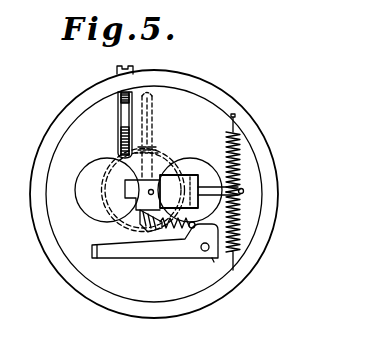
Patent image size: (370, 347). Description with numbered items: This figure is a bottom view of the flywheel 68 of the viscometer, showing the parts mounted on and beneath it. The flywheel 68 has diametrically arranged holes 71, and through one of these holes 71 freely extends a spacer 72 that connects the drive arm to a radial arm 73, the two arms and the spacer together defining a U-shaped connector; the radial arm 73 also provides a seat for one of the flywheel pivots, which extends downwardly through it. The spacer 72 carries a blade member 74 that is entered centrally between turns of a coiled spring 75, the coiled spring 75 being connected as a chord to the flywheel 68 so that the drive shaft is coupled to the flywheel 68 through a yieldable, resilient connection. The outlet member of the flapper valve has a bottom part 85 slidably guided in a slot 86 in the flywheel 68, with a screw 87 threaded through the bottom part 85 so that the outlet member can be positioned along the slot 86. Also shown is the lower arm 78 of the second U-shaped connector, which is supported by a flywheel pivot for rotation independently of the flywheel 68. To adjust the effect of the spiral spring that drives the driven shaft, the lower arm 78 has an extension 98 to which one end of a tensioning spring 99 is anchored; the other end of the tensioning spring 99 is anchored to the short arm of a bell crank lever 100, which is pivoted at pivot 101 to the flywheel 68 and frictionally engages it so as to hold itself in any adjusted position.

The flywheel 68 is at (141, 306).
The diametrically arranged holes 71 is at (91, 166).
The spacer 72 is at (191, 170).
The radial arm 73 is at (165, 160).
The blade member 74 is at (239, 164).
The coiled spring 75 is at (240, 232).
The lower arm 78 is at (149, 195).
The bottom part 85 is at (121, 108).
The slot 86 is at (131, 88).
The screw 87 is at (120, 135).
The extension 98 is at (150, 214).
The tensioning spring 99 is at (173, 230).
The bell crank lever 100 is at (193, 249).
The pivot 101 is at (213, 257).